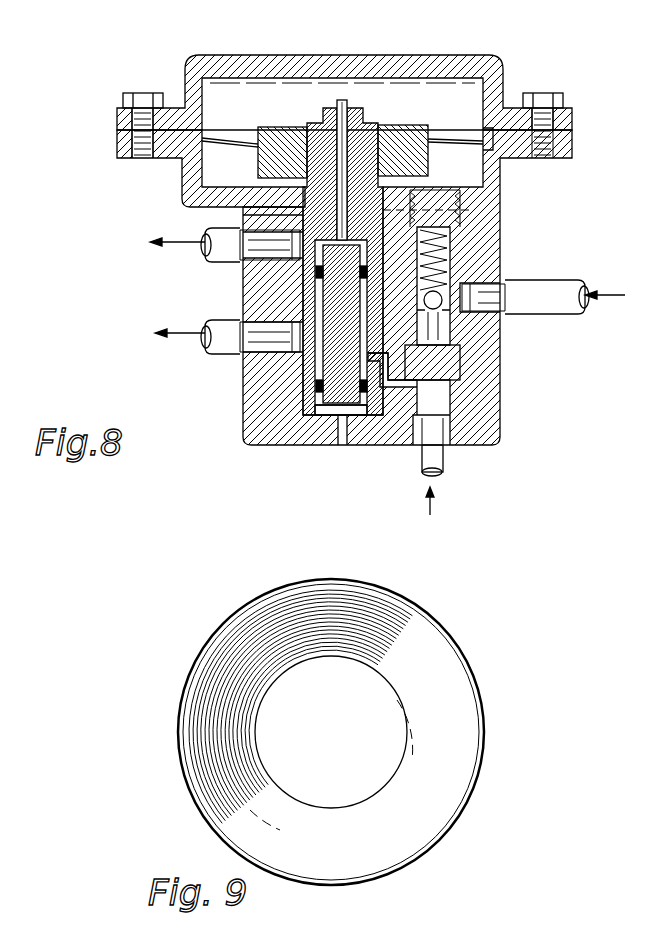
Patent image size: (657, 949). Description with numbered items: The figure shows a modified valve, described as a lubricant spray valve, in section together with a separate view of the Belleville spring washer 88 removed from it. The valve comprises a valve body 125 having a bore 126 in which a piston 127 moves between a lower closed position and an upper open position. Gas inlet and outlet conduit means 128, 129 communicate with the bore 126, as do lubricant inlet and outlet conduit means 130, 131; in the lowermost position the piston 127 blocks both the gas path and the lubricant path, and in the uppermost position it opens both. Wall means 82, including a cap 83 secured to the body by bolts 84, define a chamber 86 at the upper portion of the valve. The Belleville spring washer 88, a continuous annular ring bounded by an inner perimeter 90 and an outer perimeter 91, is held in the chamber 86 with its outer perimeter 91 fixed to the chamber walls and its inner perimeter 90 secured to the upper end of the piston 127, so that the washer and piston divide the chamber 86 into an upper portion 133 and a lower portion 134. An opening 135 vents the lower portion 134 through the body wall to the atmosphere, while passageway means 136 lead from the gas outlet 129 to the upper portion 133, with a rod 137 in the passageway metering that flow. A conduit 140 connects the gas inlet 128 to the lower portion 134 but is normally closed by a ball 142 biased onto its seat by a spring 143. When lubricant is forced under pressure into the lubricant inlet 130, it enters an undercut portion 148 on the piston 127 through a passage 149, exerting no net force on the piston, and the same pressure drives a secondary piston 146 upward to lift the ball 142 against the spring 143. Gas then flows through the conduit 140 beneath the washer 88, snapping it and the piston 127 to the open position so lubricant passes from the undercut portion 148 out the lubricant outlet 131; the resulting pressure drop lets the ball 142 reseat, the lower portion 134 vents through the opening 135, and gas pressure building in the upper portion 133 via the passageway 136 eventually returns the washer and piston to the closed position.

In FIG. 8, the wall means 82 is at (462, 158).
In FIG. 8, the cap 83 is at (487, 70).
In FIG. 8, the bolts 84 is at (140, 93).
In FIG. 8, the chamber 86 is at (272, 102).
In FIG. 8, the Belleville spring washer 88 is at (470, 150).
In FIG. 9, the Belleville spring washer 88 is at (478, 690).
In FIG. 9, the inner perimeter 90 is at (400, 757).
In FIG. 9, the outer perimeter 91 is at (483, 775).
In FIG. 8, the valve body 125 is at (256, 428).
In FIG. 8, the bore 126 is at (322, 300).
In FIG. 8, the piston 127 is at (316, 270).
In FIG. 8, the gas inlet conduit means 128 is at (483, 295).
In FIG. 8, the gas outlet conduit means 129 is at (243, 247).
In FIG. 8, the lubricant inlet conduit means 130 is at (438, 442).
In FIG. 8, the lubricant outlet conduit means 131 is at (250, 343).
In FIG. 8, the upper portion of chamber 133 is at (252, 107).
In FIG. 8, the lower portion of chamber 134 is at (252, 177).
In FIG. 8, the opening 135 is at (188, 186).
In FIG. 8, the passageway means 136 is at (302, 216).
In FIG. 8, the rod 137 is at (345, 103).
In FIG. 8, the conduit 140 is at (472, 210).
In FIG. 8, the ball 142 is at (442, 305).
In FIG. 8, the spring 143 is at (450, 267).
In FIG. 8, the secondary piston 146 is at (458, 370).
In FIG. 8, the undercut portion 148 is at (312, 408).
In FIG. 8, the passage 149 is at (386, 380).